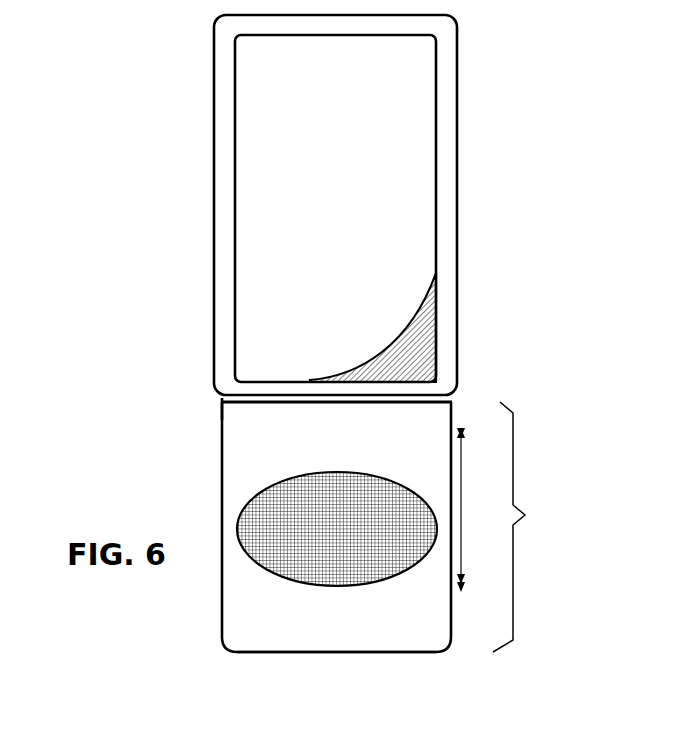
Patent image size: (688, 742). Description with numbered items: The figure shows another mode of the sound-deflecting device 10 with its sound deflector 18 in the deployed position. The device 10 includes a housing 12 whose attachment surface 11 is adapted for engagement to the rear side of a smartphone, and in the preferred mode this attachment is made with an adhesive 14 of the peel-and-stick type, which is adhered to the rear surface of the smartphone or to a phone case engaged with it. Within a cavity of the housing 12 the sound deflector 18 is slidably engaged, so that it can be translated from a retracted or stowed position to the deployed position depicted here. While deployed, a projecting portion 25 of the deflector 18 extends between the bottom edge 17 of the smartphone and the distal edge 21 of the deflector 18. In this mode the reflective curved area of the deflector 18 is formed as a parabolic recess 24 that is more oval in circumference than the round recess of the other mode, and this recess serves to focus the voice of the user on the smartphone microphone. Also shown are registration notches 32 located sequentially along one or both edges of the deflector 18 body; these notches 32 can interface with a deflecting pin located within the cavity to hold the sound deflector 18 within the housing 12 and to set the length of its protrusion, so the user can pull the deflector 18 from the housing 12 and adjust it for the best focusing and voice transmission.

The device 10 is at (317, 351).
The attachment surface 11 is at (502, 44).
The housing 12 is at (453, 253).
The adhesive 14 is at (413, 347).
The bottom edge 17 is at (435, 402).
The registration notches 32 is at (222, 403).
The sound deflector 18 is at (235, 460).
The distal edge 21 is at (325, 655).
The parabolic recess 24 is at (280, 560).
The projecting portion 25 is at (507, 527).